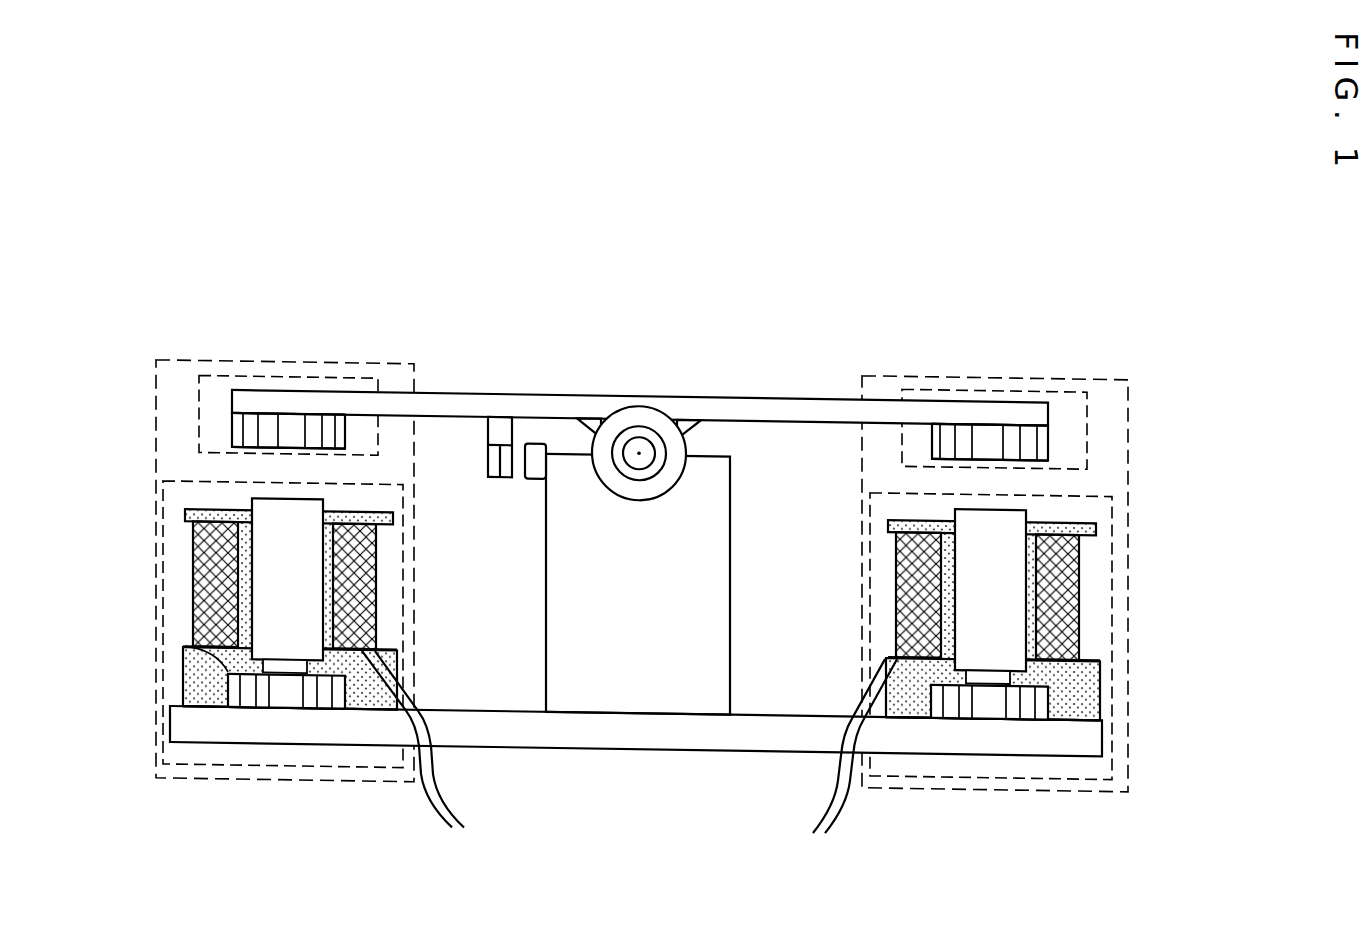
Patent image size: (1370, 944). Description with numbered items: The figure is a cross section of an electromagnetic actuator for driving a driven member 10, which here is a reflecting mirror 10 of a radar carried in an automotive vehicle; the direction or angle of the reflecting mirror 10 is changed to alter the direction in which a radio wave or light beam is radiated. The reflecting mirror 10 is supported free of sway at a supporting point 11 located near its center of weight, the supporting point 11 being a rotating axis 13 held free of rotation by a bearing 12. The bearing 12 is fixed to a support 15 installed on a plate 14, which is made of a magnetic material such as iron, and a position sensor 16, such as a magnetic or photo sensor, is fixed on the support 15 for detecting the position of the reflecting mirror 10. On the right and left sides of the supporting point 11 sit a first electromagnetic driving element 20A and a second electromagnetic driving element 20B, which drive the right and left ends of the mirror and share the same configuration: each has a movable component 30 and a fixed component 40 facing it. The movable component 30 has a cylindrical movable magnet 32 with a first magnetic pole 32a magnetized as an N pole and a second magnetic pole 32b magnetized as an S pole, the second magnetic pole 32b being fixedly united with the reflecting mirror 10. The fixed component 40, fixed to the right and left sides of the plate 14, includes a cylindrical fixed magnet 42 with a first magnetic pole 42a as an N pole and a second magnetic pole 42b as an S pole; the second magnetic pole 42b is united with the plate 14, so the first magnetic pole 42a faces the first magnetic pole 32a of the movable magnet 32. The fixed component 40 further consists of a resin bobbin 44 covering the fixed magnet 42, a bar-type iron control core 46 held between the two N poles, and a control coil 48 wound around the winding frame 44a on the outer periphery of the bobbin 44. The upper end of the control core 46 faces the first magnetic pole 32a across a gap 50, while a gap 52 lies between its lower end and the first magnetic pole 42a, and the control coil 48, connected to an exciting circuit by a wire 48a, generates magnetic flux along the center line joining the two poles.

The driven member (reflecting mirror) 10 is at (558, 395).
The supporting point 11 is at (638, 453).
The bearing 12 is at (668, 447).
The rotating axis 13 is at (632, 447).
The plate 14 is at (760, 730).
The support 15 is at (617, 692).
The position sensor 16 is at (516, 428).
The first electromagnetic driving element 20A is at (1130, 380).
The second electromagnetic driving element 20B is at (165, 360).
The movable component 30 is at (218, 375).
The movable magnet 32 is at (230, 423).
The first magnetic pole of the movable magnet 32a is at (250, 449).
The second magnetic pole of the movable magnet 32b is at (284, 393).
The fixed component 40 is at (157, 503).
The fixed magnet 42 is at (220, 693).
The first magnetic pole of the fixed magnet 42a is at (187, 647).
The second magnetic pole of the fixed magnet 42b is at (243, 712).
The bobbin 44 is at (357, 652).
The winding frame 44a is at (187, 517).
The control core 46 is at (307, 541).
The control coil 48 is at (197, 572).
The wire 48a is at (445, 780).
The gap 50 is at (318, 472).
The gap 52 is at (293, 670).